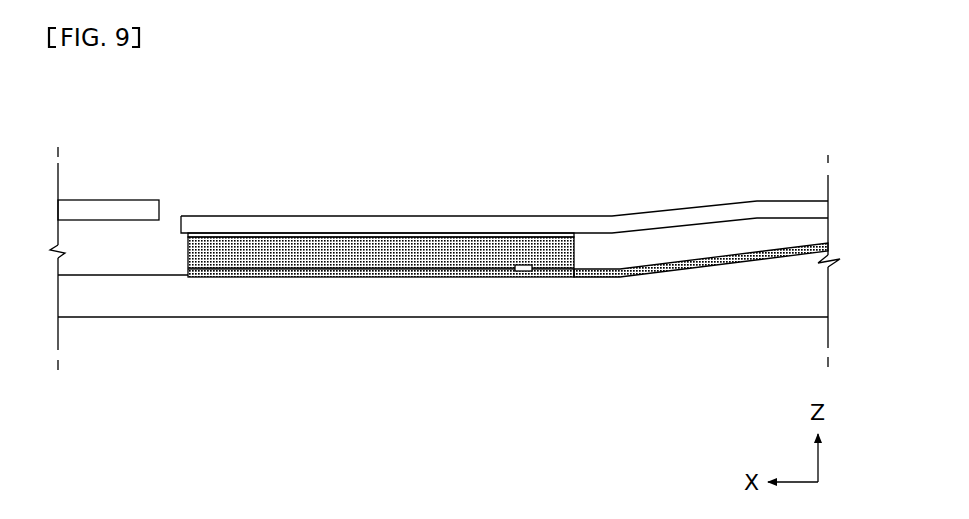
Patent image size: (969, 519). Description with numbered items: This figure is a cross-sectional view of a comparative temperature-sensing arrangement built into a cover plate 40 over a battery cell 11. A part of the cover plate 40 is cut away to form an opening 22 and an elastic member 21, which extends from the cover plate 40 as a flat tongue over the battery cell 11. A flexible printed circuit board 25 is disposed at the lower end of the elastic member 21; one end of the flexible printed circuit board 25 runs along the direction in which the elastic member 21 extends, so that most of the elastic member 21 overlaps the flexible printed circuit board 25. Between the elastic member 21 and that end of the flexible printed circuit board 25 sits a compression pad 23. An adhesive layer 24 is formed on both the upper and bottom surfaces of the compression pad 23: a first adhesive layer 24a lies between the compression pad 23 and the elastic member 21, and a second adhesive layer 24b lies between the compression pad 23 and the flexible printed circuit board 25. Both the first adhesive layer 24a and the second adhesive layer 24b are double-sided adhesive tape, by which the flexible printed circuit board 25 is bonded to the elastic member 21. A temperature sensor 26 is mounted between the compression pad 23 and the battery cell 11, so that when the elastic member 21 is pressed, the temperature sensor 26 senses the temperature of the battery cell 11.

The battery cell 11 is at (323, 302).
The elastic member 21 is at (340, 228).
The opening 22 is at (174, 210).
The compression pad 23 is at (263, 245).
The adhesive layer 24 is at (480, 152).
The first adhesive layer 24a is at (403, 236).
The second adhesive layer 24b is at (458, 274).
The flexible printed circuit board 25 is at (646, 277).
The temperature sensor 26 is at (526, 272).
The cover plate 40 is at (105, 208).